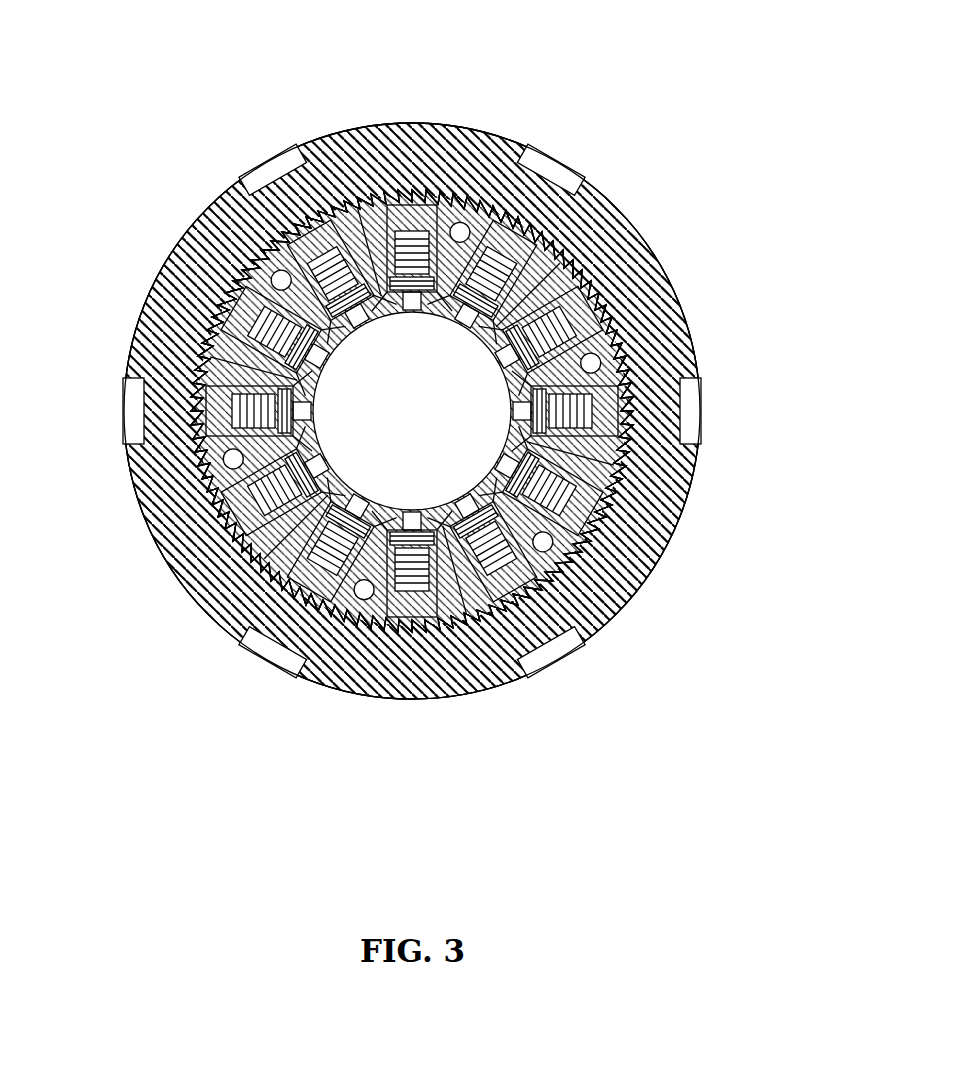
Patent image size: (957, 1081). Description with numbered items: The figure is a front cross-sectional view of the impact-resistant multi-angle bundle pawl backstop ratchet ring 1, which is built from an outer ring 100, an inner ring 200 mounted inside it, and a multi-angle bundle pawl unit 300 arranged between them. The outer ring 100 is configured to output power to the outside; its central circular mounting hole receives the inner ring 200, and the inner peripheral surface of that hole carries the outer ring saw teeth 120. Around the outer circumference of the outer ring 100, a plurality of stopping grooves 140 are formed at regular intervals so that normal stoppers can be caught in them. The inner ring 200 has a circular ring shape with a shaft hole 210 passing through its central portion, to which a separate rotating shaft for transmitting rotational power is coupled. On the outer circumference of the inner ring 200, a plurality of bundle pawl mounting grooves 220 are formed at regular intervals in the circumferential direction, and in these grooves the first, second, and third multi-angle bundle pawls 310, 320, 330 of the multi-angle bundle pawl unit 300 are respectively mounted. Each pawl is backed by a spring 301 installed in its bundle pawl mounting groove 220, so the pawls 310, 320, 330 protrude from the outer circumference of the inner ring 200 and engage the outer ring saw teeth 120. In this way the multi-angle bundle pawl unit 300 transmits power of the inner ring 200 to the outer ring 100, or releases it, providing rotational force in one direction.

The impact-resistant multi-angle bundle pawl backstop ratchet ring 1 is at (71, 48).
The outer ring 100 is at (637, 270).
The outer ring saw teeth 120 is at (530, 605).
The stopping grooves 140 is at (552, 175).
The inner ring 200 is at (252, 550).
The shaft hole 210 is at (206, 438).
The bundle pawl mounting grooves 220 is at (463, 220).
The multi-angle bundle pawl unit 300 is at (272, 64).
The springs 301 is at (222, 316).
The first multi-angle bundle pawl 310 is at (396, 212).
The second multi-angle bundle pawl 320 is at (300, 206).
The third multi-angle bundle pawl 330 is at (252, 252).